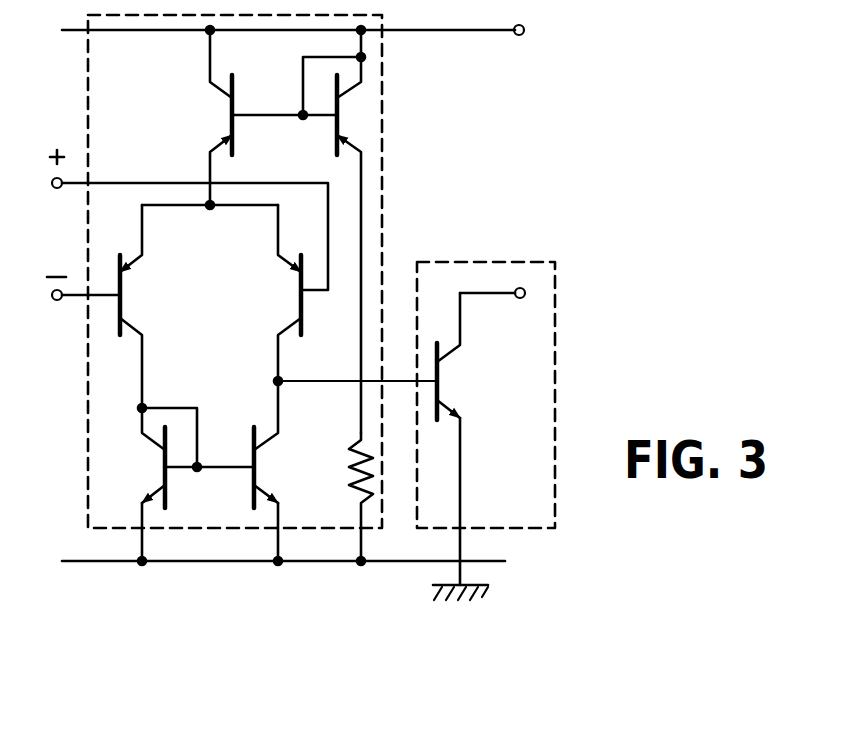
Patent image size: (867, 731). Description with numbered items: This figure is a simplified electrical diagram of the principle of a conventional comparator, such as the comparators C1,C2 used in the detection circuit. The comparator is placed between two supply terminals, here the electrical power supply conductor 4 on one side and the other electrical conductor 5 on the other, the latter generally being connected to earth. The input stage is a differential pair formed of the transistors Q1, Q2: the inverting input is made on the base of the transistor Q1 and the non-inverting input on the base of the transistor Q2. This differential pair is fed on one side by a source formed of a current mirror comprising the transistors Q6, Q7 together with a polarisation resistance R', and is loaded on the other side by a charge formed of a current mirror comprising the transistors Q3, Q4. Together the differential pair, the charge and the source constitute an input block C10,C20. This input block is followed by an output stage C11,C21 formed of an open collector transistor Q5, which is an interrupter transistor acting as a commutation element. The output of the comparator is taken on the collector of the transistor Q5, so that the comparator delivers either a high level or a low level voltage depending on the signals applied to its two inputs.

The electrical power supply conductor 4 is at (151, 33).
The other electrical conductor 5 is at (186, 563).
The input block C10,C20 is at (381, 92).
The output stage C11,C21 is at (556, 318).
The comparators C1,C2 is at (458, 221).
The transistor Q1 is at (138, 306).
The transistor Q2 is at (279, 293).
The transistor Q3 is at (146, 484).
The transistor Q4 is at (274, 469).
The open collector transistor Q5 is at (481, 436).
The transistor Q6 is at (211, 117).
The transistor Q7 is at (304, 231).
The polarisation resistance R' is at (351, 497).